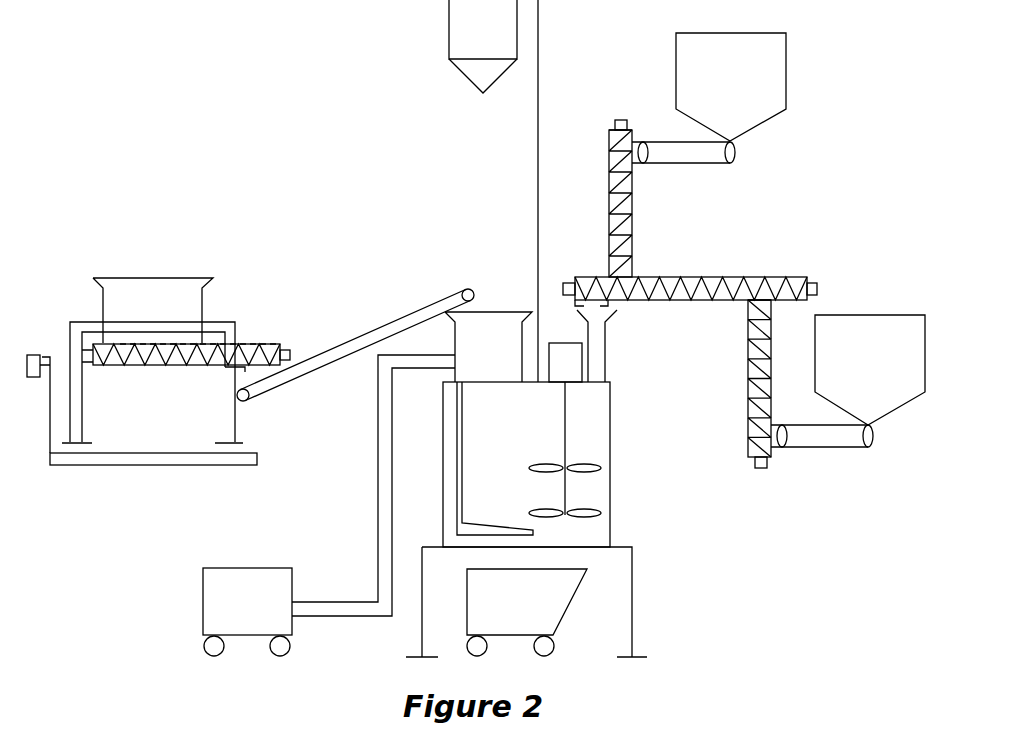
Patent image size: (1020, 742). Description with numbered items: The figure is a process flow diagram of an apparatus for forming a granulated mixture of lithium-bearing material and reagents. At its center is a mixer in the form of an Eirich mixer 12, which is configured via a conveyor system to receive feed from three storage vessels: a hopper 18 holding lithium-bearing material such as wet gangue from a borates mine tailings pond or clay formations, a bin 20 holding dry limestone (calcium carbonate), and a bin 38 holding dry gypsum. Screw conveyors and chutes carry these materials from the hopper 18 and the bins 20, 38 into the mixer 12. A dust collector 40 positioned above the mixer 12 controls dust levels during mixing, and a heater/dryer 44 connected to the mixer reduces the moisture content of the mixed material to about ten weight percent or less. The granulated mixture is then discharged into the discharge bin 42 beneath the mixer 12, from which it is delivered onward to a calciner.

The Eirich mixer 12 is at (526, 484).
The hopper 18 is at (143, 416).
The bin 20 is at (731, 87).
The bin 38 is at (870, 370).
The dust collector 40 is at (483, 46).
The discharge bin 42 is at (527, 612).
The heater/dryer 44 is at (247, 612).